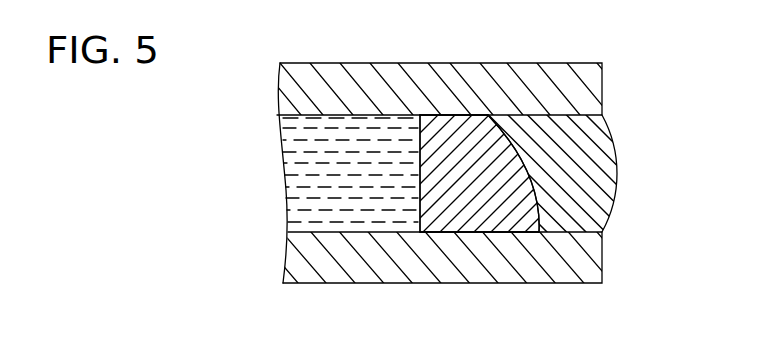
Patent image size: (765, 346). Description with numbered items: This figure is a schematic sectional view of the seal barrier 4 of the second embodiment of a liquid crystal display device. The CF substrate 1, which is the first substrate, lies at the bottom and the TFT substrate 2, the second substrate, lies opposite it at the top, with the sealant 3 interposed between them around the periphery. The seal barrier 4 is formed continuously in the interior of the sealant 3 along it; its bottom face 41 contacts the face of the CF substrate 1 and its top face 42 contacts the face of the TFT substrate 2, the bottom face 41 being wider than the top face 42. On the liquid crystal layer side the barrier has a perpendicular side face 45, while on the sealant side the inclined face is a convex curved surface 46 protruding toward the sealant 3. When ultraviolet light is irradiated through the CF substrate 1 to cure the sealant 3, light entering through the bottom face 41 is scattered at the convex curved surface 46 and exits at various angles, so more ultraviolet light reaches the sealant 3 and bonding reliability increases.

The CF substrate 1 is at (590, 255).
The TFT substrate 2 is at (603, 88).
The sealant 3 is at (603, 172).
The seal barrier 4 is at (483, 140).
The bottom face 41 is at (487, 237).
The top face 42 is at (439, 114).
The side face 45 is at (420, 193).
The convex curved surface 46 is at (520, 158).